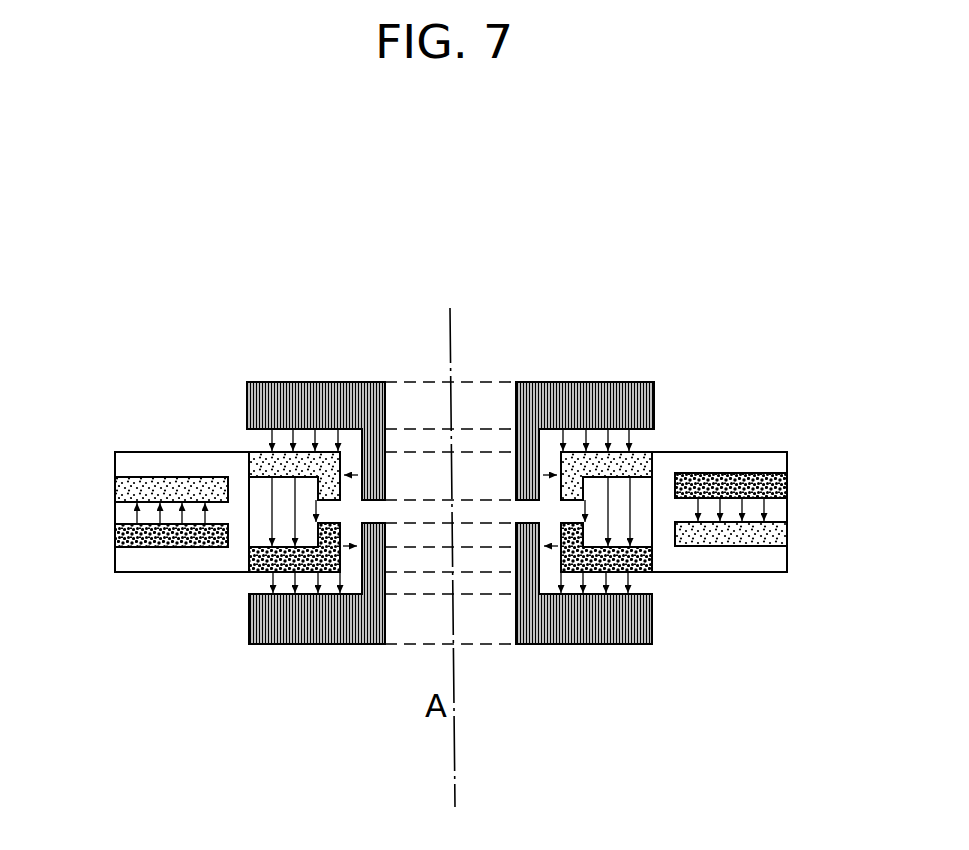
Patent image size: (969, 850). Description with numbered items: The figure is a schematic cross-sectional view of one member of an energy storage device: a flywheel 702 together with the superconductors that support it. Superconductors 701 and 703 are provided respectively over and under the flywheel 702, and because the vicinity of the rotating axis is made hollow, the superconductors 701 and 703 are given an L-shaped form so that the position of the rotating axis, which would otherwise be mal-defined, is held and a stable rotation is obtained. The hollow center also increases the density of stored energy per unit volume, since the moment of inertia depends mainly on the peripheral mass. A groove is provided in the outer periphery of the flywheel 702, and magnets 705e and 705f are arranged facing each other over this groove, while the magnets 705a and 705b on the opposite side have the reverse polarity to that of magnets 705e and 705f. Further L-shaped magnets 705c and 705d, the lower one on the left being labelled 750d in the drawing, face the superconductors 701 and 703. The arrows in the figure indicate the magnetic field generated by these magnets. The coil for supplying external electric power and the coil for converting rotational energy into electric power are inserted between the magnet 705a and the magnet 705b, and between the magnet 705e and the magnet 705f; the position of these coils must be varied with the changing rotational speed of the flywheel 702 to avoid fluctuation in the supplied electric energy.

The superconductor 701 is at (318, 383).
The flywheel 702 is at (180, 572).
The superconductor 703 is at (345, 644).
The magnet 705a is at (153, 473).
The magnet 705b is at (142, 547).
The magnet 705c is at (683, 375).
The magnet 705d is at (655, 571).
The permanent magnet (N pole) L-shaped (left side, labelled 750d) 750d is at (262, 572).
The magnet 705e is at (746, 467).
The magnet 705f is at (750, 546).